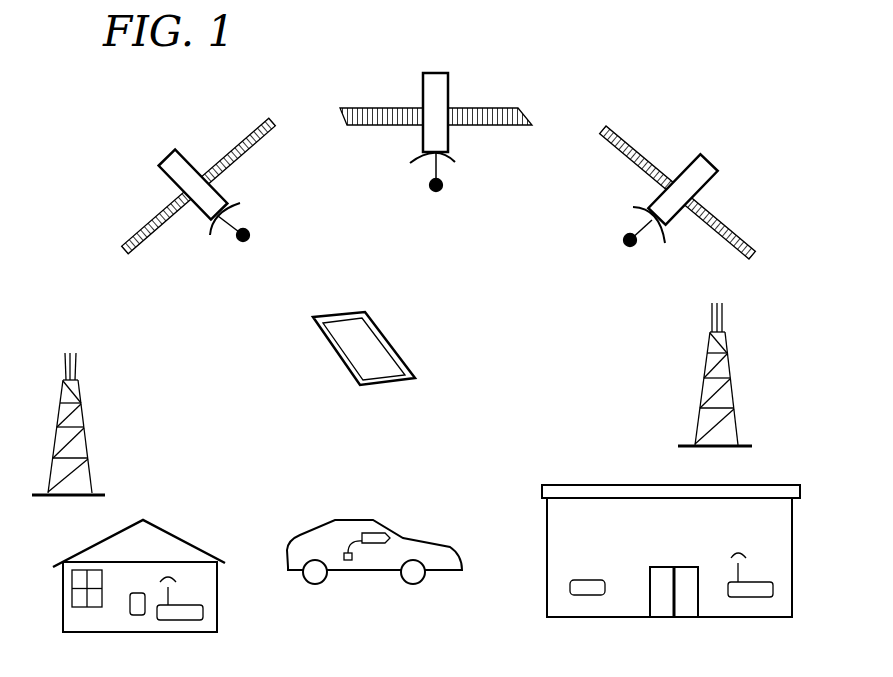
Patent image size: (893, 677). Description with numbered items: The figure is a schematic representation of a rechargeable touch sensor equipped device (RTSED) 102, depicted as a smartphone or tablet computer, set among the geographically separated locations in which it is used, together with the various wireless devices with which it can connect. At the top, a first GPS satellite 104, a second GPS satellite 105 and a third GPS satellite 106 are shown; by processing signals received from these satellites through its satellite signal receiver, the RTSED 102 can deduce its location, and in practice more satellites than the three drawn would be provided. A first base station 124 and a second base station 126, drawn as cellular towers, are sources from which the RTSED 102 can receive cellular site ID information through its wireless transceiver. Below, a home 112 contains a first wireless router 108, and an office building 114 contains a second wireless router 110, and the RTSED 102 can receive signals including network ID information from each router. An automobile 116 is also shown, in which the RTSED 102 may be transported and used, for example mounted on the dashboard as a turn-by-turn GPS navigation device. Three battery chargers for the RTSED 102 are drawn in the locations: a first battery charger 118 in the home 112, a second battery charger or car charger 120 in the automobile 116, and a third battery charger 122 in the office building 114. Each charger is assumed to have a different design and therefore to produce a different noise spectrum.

The rechargeable touch sensor equipped device (RTSED) 102 is at (370, 317).
The first GPS satellite 104 is at (272, 124).
The second GPS satellite 105 is at (440, 93).
The third GPS satellite 106 is at (677, 177).
The first wireless router 108 is at (203, 605).
The second wireless router 110 is at (770, 582).
The home 112 is at (157, 591).
The office building 114 is at (666, 534).
The automobile 116 is at (377, 550).
The first battery charger 118 is at (132, 617).
The second battery charger (car charger) 120 is at (377, 545).
The third battery charger 122 is at (570, 583).
The first base station 124 is at (92, 478).
The second base station 126 is at (695, 437).